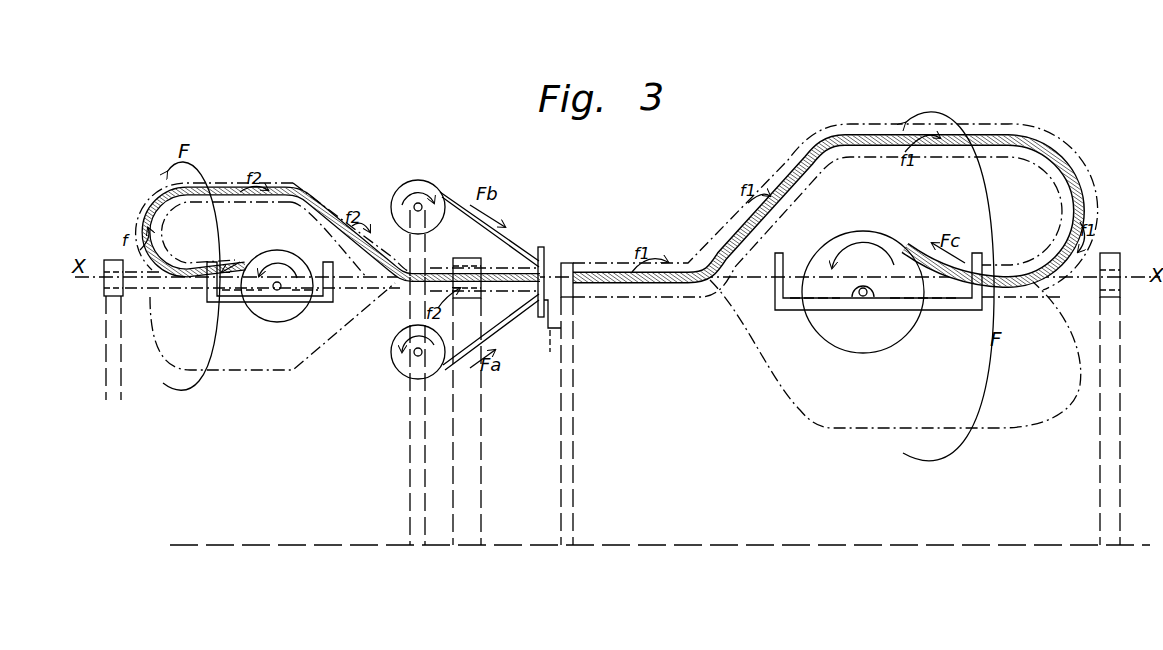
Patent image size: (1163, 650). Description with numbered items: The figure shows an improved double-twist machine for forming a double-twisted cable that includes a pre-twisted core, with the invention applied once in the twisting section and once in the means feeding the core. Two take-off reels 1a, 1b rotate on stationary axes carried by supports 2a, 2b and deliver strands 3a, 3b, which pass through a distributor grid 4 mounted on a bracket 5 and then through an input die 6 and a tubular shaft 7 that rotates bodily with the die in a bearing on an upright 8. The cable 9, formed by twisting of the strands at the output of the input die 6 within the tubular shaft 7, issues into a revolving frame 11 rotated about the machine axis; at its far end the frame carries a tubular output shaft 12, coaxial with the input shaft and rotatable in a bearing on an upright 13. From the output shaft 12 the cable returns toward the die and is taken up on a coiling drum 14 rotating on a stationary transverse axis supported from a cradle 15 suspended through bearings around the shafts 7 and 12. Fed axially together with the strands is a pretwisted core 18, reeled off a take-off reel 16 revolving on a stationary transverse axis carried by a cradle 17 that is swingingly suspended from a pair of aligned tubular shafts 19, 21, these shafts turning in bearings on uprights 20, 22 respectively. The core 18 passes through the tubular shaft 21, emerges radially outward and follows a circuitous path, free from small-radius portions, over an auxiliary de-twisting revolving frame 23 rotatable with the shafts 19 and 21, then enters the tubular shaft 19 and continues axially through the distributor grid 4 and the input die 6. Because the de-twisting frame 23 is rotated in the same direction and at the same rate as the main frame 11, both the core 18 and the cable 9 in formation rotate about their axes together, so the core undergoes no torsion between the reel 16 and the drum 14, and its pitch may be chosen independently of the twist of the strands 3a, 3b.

The take-off reel 1a is at (402, 372).
The take-off reel 1b is at (406, 185).
The support 2a is at (410, 466).
The support 2b is at (423, 244).
The strand 3a is at (524, 322).
The strand 3b is at (521, 237).
The distributor grid 4 is at (548, 248).
The bracket 5 is at (552, 352).
The input die 6 is at (572, 293).
The tubular shaft 7 is at (646, 300).
The upright 8 is at (575, 456).
The cable 9 is at (613, 272).
The revolving frame 11 is at (868, 132).
The tubular output shaft 12 is at (1028, 290).
The upright 13 is at (1100, 437).
The coiling drum 14 is at (866, 232).
The cradle 15 is at (951, 310).
The take-off reel 16 is at (272, 322).
The cradle 17 is at (320, 302).
The pretwisted core 18 is at (218, 188).
The tubular shaft 19 is at (365, 282).
The upright 20 is at (470, 473).
The tubular shaft 21 is at (162, 290).
The upright 22 is at (110, 396).
The revolving frame 23 is at (148, 216).